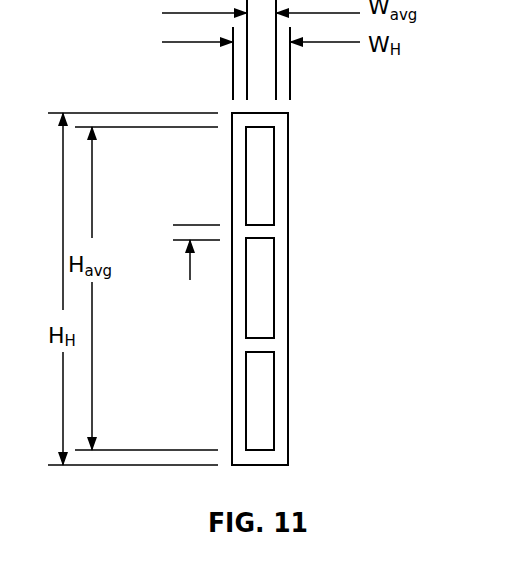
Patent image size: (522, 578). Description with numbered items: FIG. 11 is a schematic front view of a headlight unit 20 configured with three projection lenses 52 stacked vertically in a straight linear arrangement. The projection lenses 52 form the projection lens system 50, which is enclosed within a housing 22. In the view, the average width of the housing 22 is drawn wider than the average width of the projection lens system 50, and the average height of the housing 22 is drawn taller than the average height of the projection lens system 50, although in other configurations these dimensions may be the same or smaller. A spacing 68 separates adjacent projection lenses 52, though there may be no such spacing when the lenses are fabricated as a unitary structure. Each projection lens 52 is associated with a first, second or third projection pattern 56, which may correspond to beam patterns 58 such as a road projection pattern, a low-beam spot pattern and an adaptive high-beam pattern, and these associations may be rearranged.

The headlight unit 20 is at (269, 238).
The projection lens system 50 is at (132, 89).
The housing 22 is at (239, 310).
The projection lens 52 is at (377, 288).
The projection pattern 56 is at (377, 288).
The beam pattern 58 is at (262, 167).
The spacing 68 is at (190, 225).